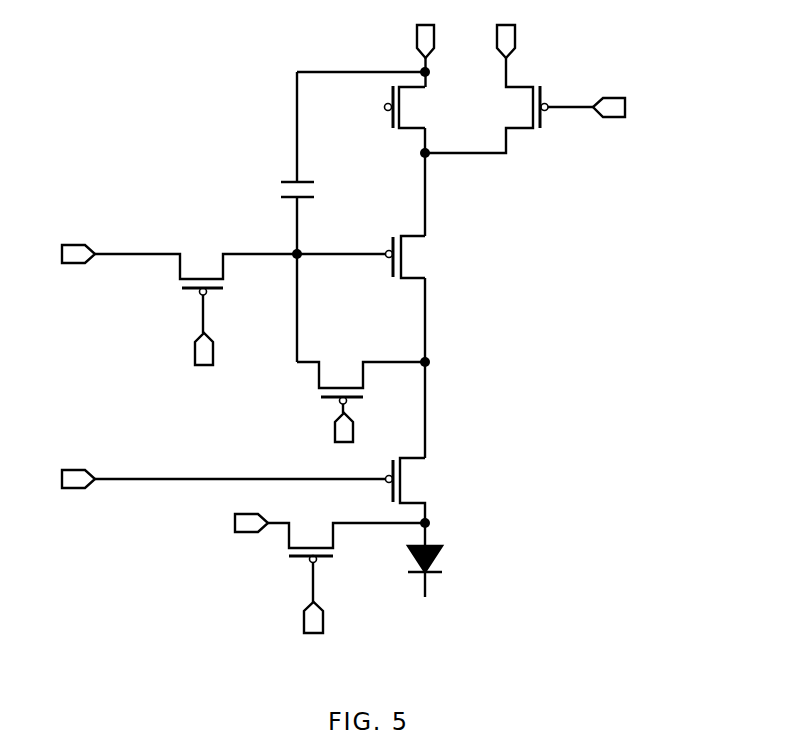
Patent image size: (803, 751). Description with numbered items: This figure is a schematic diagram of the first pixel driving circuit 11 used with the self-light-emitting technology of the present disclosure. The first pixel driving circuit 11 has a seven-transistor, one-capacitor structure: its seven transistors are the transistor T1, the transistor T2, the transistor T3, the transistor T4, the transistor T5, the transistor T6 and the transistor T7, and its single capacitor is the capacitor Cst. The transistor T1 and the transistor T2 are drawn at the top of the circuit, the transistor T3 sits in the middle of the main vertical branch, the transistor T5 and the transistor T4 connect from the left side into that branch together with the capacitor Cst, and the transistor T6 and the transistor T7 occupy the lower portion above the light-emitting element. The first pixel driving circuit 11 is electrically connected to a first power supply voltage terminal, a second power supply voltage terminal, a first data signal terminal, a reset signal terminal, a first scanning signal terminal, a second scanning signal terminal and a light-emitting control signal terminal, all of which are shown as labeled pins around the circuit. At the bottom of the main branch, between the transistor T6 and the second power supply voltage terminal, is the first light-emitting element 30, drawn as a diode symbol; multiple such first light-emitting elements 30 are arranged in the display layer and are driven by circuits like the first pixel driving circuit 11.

The first pixel driving circuit 11 is at (703, 28).
The first light-emitting element 30 is at (443, 547).
The transistor T1 is at (413, 107).
The transistor T2 is at (486, 105).
The transistor T3 is at (417, 257).
The transistor T4 is at (361, 377).
The transistor T5 is at (196, 278).
The transistor T6 is at (419, 490).
The transistor T7 is at (346, 549).
The capacitor Cst is at (279, 194).